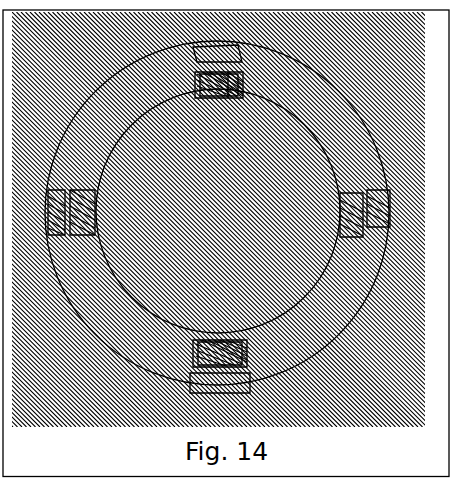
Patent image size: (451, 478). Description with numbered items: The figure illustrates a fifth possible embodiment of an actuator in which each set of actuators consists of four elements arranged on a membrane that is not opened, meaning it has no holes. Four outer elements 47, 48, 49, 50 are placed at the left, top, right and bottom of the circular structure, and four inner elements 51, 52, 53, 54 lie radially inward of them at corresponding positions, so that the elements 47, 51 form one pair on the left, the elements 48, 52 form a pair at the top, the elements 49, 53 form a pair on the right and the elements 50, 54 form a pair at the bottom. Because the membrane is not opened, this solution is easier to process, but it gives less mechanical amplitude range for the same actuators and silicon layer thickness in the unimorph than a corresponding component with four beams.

The first emitter element 47 is at (60, 213).
The second emitter element 48 is at (190, 45).
The third emitter element 49 is at (378, 210).
The fourth emitter element 50 is at (277, 387).
The first detector element 51 is at (93, 197).
The second detector element 52 is at (218, 85).
The third detector element 53 is at (350, 209).
The fourth detector element 54 is at (217, 353).